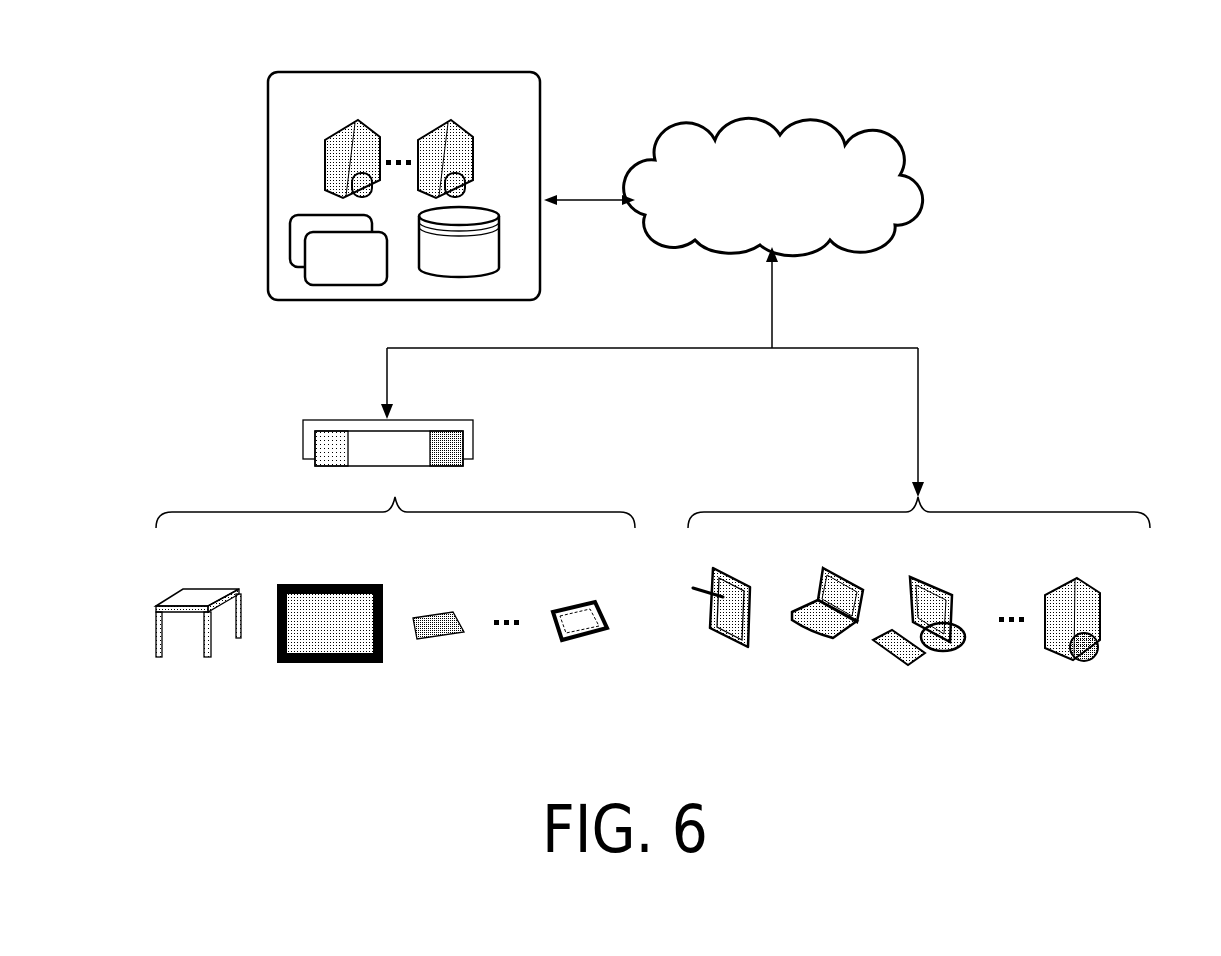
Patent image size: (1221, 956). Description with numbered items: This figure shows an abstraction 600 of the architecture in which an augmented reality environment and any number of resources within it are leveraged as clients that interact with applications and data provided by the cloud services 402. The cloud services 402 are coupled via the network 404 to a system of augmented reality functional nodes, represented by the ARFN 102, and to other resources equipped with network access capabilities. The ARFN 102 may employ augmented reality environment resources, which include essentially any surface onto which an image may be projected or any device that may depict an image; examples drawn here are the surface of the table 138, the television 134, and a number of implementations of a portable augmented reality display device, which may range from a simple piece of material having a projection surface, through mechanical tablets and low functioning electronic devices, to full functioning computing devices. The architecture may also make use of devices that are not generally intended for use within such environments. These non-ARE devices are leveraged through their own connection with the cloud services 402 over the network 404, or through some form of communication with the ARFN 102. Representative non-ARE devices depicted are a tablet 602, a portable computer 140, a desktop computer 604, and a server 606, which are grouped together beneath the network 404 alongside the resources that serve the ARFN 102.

The abstraction of the architecture 600 is at (1155, 80).
The cloud services 402 is at (500, 101).
The network 404 is at (754, 209).
The ARFN 102 is at (418, 430).
The table 138 is at (155, 660).
The television 134 is at (330, 664).
The tablet 602 is at (730, 645).
The portable computer 140 is at (828, 641).
The desktop computer 604 is at (942, 653).
The server 606 is at (1065, 660).